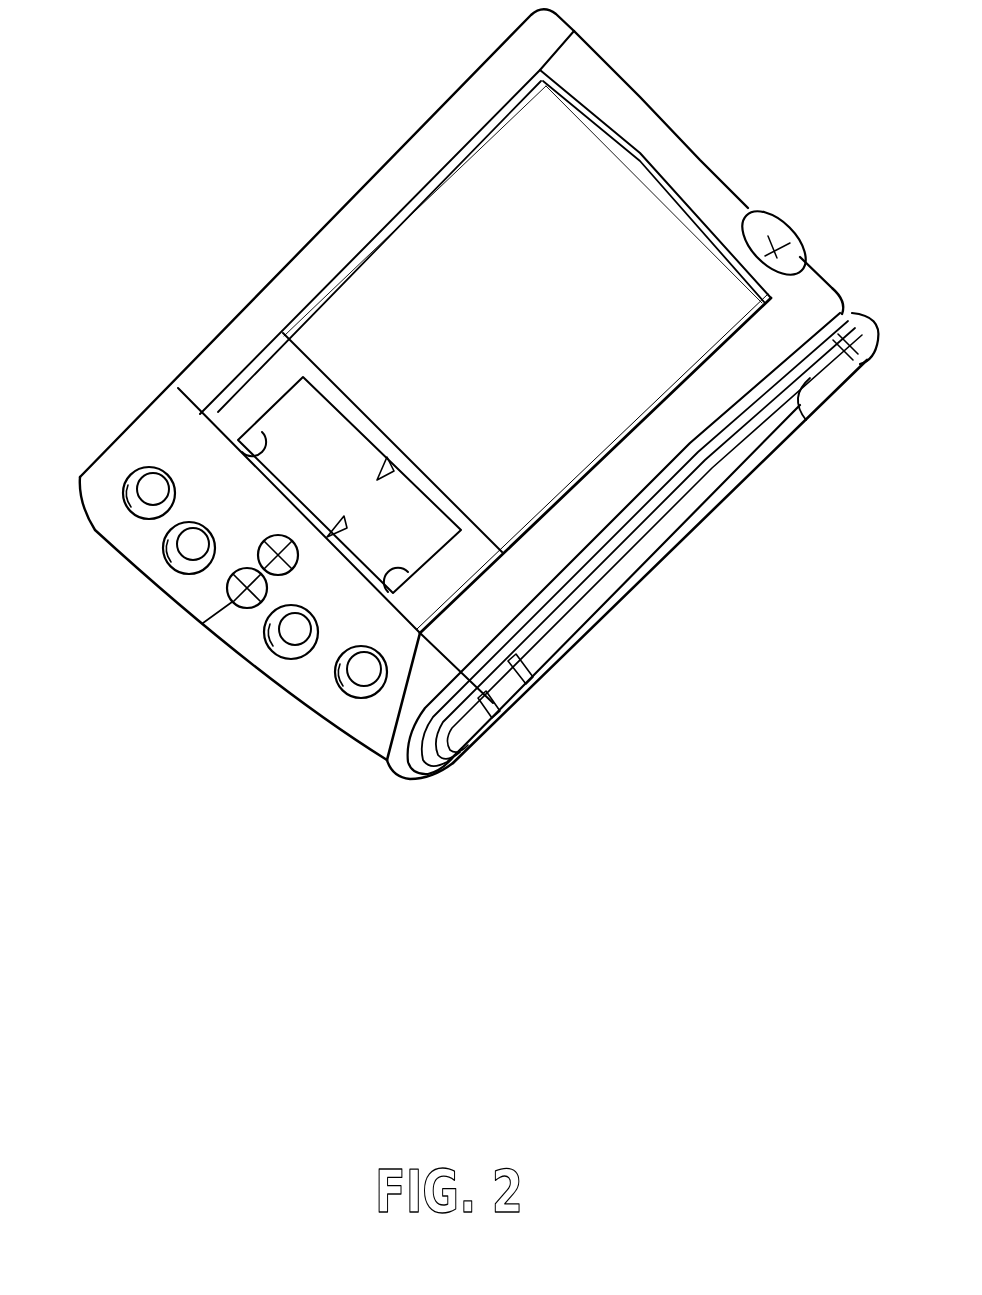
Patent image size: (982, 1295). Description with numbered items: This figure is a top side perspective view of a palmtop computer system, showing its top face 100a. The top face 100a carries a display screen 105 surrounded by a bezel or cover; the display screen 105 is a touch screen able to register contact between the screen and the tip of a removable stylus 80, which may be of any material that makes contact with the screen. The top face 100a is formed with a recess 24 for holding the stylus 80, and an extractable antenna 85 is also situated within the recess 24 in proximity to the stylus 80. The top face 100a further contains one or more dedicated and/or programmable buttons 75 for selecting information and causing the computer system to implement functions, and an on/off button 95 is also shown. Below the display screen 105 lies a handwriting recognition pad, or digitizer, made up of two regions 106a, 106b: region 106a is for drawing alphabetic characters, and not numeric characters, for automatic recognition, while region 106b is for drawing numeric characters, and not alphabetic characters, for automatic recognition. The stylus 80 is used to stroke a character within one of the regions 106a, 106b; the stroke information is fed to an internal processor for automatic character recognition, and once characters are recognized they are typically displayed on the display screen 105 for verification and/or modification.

The top face 100a is at (216, 31).
The display screen 105 is at (562, 199).
The region for alphabetic characters 106a is at (346, 444).
The region for numeric characters 106b is at (433, 549).
The on/off button 95 is at (777, 230).
The buttons 75 is at (150, 490).
The stylus 80 is at (630, 570).
The recess 24 is at (752, 468).
The extractable antenna 85 is at (466, 756).